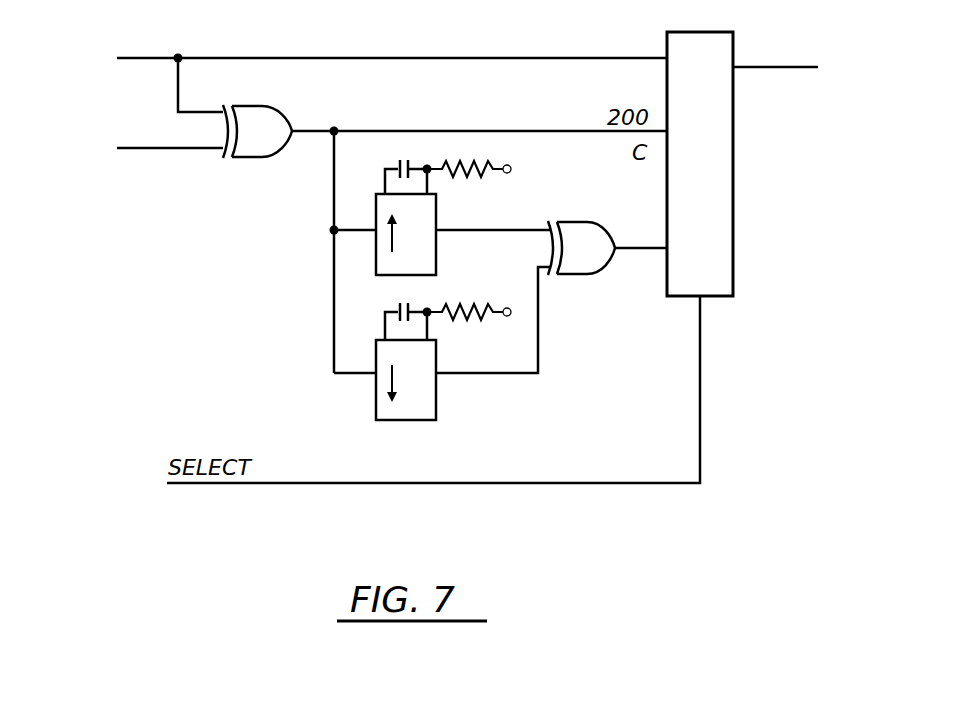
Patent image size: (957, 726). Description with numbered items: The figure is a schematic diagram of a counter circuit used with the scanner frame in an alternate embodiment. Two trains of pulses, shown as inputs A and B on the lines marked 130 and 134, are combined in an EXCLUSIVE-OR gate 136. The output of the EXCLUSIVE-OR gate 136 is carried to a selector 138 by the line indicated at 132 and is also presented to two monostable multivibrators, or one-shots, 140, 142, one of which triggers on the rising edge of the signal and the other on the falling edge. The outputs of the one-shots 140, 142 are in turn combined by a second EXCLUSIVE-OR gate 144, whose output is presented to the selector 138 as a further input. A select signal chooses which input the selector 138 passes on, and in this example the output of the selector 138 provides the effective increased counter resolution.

The input A line 130 is at (137, 58).
The signal line 100 to selector 132 is at (450, 44).
The input B line 134 is at (143, 148).
The EXCLUSIVE-OR gate 136 is at (273, 88).
The selector 138 is at (733, 165).
The monostable multivibrator 140 is at (436, 207).
The monostable multivibrator 142 is at (436, 398).
The EXCLUSIVE-OR gate 144 is at (561, 276).